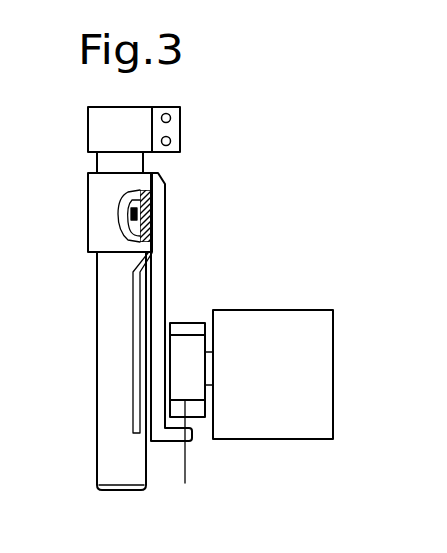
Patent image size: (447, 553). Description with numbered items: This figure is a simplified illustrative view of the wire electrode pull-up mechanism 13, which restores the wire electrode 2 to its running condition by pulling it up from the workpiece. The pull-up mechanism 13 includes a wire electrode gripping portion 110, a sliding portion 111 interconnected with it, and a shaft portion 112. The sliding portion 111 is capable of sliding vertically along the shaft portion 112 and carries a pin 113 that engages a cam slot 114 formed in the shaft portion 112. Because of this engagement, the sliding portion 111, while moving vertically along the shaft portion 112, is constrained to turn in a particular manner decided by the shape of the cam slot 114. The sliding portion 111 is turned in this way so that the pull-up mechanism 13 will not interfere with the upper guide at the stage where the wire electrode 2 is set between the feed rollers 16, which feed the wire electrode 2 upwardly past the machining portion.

The sliding portion 111 is at (95, 220).
The pin 113 is at (167, 213).
The shaft portion 112 is at (97, 398).
The cam slot 114 is at (133, 304).
The wire pull-up mechanism 13 is at (187, 270).
The feed rollers 16 is at (195, 388).
The wire electrode 2 is at (186, 478).
The wire electrode gripping portion 110 is at (168, 442).